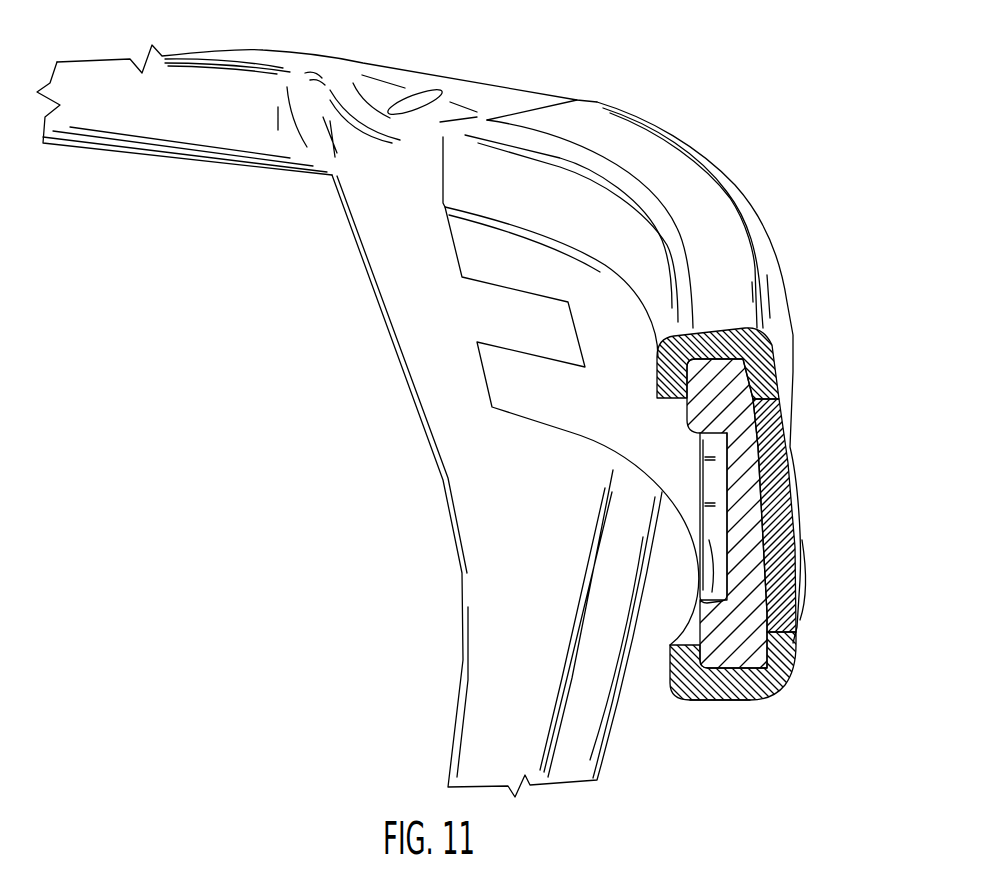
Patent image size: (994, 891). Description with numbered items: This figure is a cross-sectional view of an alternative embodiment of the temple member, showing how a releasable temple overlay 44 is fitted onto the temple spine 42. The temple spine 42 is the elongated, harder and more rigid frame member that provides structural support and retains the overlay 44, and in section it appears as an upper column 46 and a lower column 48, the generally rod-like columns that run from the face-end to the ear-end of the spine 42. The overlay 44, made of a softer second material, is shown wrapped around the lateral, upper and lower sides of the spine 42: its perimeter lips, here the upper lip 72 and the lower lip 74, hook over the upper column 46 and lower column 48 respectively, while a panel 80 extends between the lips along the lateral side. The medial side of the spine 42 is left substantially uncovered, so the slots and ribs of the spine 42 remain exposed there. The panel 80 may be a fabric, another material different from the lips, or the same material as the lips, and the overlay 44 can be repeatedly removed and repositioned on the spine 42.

The releasable temple overlay 44 is at (735, 298).
The upper lip 72 is at (767, 370).
The upper column 46 is at (727, 398).
The panel 80 is at (781, 478).
The temple spine 42 is at (753, 562).
The lower column 48 is at (750, 648).
The lower lip 74 is at (753, 700).